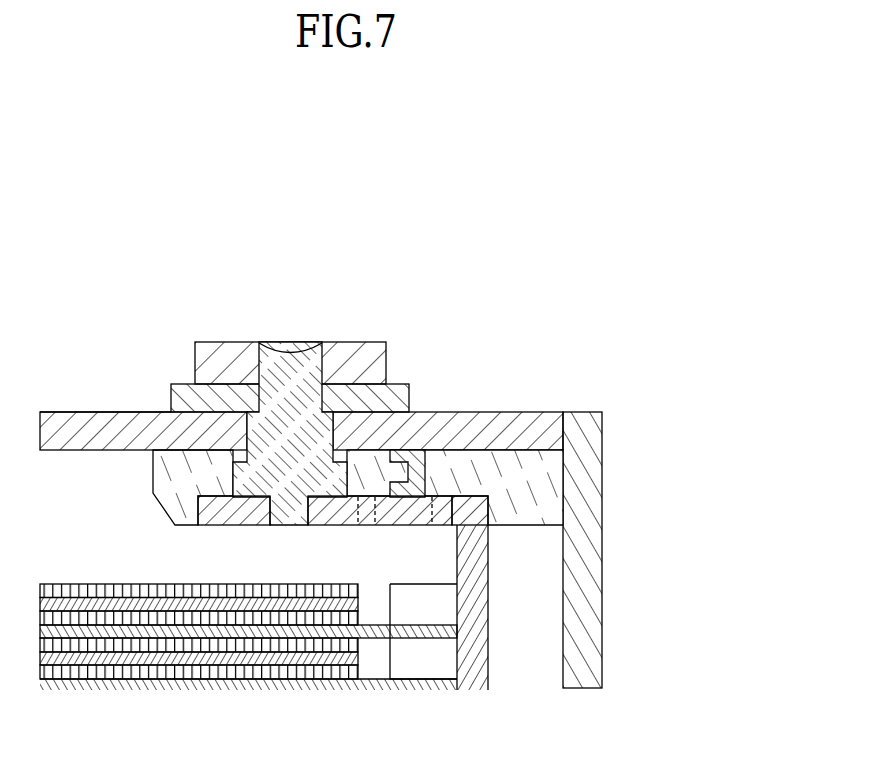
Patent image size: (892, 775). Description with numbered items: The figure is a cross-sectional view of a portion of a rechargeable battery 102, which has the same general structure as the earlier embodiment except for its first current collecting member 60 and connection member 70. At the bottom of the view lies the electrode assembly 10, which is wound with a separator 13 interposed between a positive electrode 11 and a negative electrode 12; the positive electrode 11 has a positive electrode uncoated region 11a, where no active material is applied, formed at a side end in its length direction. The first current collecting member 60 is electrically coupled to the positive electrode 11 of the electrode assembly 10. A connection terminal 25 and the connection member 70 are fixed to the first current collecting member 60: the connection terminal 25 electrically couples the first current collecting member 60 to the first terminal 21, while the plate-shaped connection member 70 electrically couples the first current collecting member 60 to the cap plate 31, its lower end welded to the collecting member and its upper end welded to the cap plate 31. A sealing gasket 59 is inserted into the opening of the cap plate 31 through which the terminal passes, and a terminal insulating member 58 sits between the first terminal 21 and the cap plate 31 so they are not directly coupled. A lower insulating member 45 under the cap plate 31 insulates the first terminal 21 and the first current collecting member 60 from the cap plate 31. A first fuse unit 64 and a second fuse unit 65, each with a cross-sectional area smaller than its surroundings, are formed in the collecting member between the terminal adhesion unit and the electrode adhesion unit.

The electrode assembly 10 is at (248, 636).
The positive electrode 11 is at (186, 636).
The positive electrode uncoated region 11a is at (423, 632).
The negative electrode 12 is at (253, 655).
The separator 13 is at (107, 648).
The first terminal 21 is at (352, 365).
The connection terminal 25 is at (290, 368).
The cap plate 31 is at (533, 412).
The lower insulating member 45 is at (520, 498).
The terminal insulating member 58 is at (397, 400).
The sealing gasket 59 is at (143, 412).
The first current collecting member 60 is at (495, 640).
The first fuse unit 64 is at (367, 527).
The second fuse unit 65 is at (443, 527).
The connection member 70 is at (420, 473).
The rechargeable battery 102 is at (321, 460).